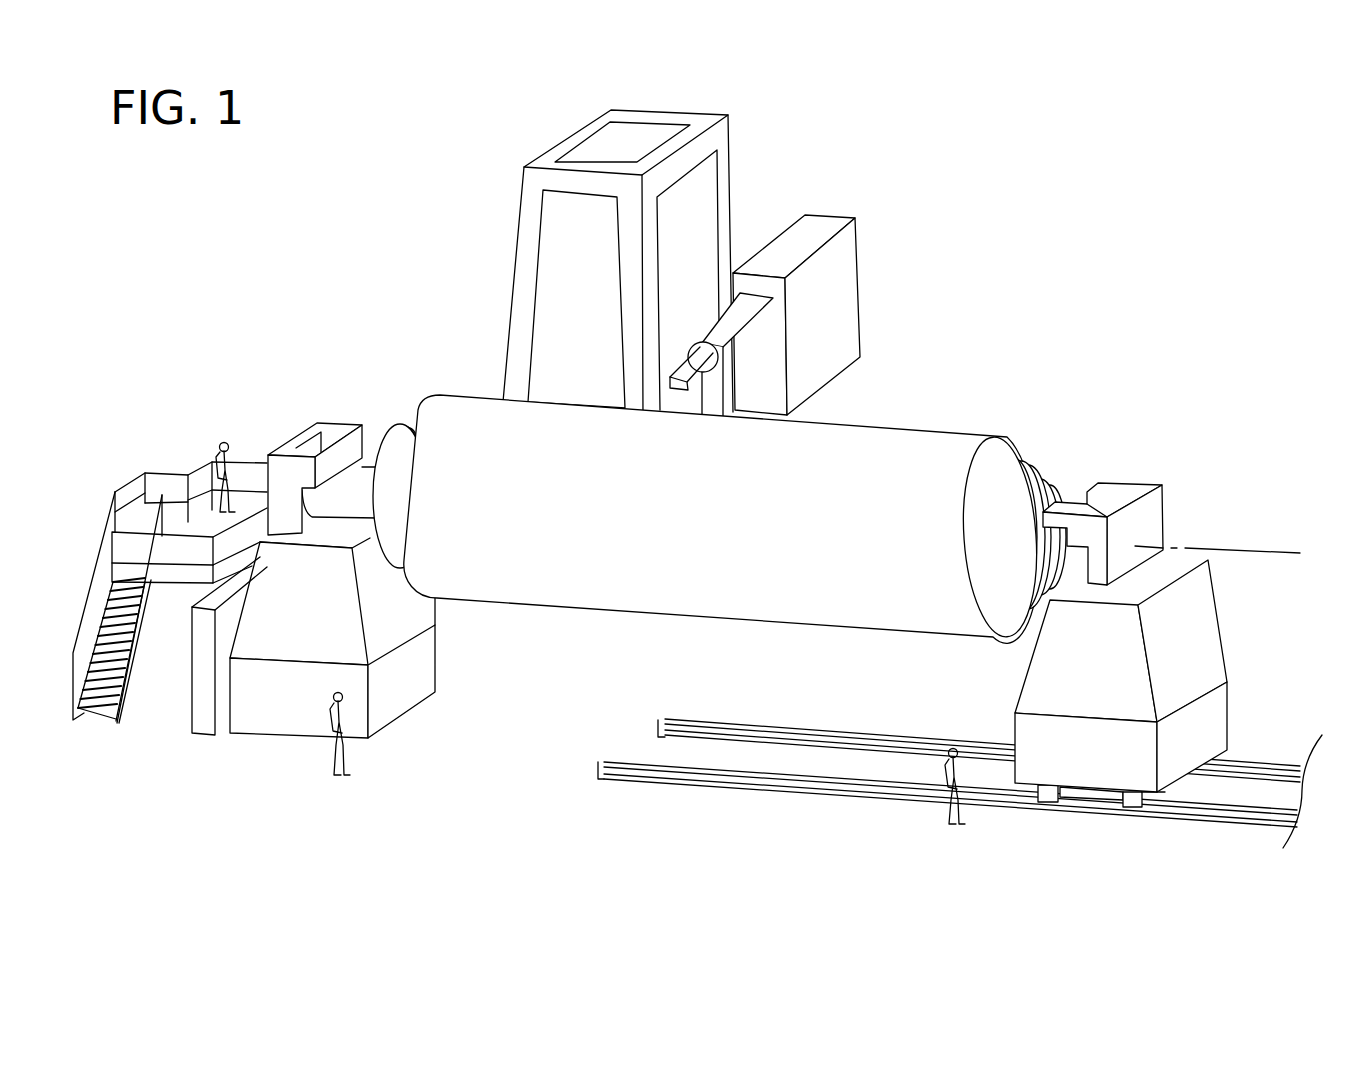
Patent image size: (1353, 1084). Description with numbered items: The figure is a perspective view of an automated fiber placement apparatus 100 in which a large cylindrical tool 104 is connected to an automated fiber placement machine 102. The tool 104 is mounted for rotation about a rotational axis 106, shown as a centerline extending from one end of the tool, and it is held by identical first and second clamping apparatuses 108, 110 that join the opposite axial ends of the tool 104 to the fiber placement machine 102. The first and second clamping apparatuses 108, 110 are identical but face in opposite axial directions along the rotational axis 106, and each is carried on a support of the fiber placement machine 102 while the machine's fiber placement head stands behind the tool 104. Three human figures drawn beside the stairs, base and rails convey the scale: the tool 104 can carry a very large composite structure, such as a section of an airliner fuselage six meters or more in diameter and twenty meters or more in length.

The automated fiber placement apparatus 100 is at (1117, 366).
The automated fiber placement machine 102 is at (259, 713).
The tool 104 is at (943, 448).
The rotational axis 106 is at (1234, 547).
The first clamping apparatus 108 is at (1059, 450).
The second clamping apparatus 110 is at (416, 406).